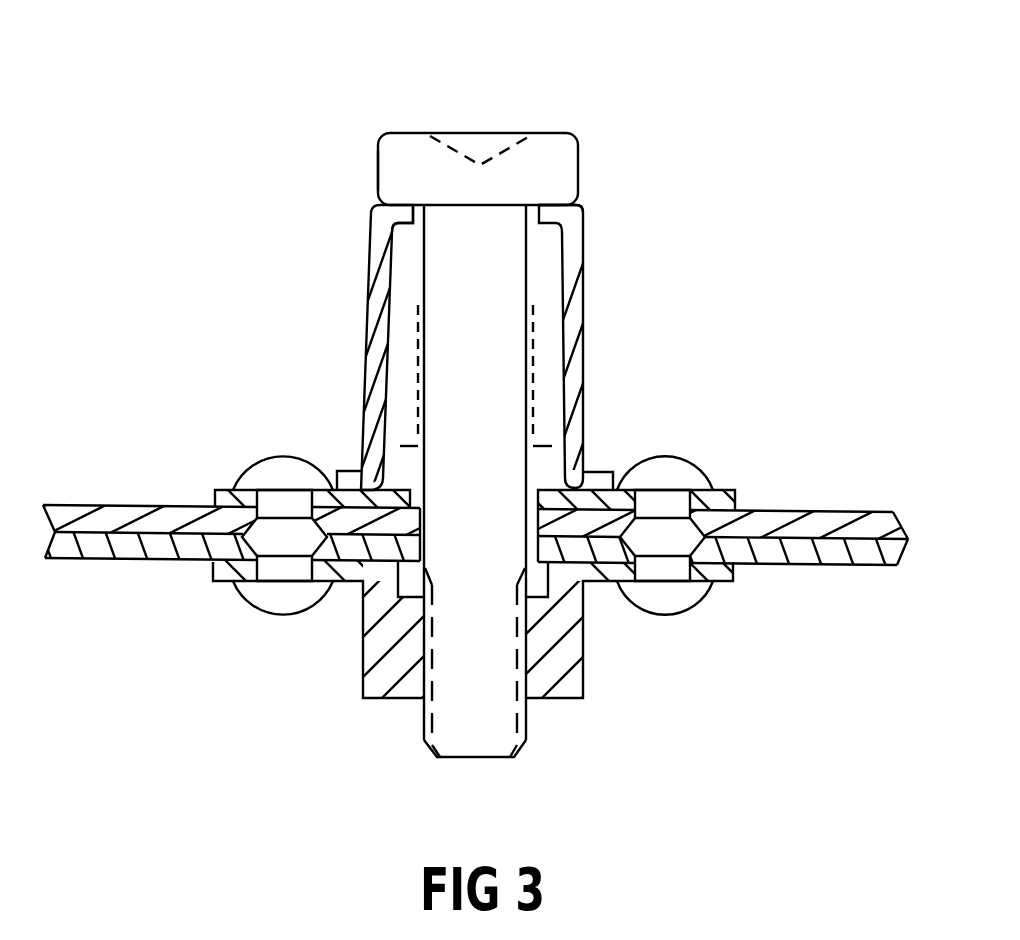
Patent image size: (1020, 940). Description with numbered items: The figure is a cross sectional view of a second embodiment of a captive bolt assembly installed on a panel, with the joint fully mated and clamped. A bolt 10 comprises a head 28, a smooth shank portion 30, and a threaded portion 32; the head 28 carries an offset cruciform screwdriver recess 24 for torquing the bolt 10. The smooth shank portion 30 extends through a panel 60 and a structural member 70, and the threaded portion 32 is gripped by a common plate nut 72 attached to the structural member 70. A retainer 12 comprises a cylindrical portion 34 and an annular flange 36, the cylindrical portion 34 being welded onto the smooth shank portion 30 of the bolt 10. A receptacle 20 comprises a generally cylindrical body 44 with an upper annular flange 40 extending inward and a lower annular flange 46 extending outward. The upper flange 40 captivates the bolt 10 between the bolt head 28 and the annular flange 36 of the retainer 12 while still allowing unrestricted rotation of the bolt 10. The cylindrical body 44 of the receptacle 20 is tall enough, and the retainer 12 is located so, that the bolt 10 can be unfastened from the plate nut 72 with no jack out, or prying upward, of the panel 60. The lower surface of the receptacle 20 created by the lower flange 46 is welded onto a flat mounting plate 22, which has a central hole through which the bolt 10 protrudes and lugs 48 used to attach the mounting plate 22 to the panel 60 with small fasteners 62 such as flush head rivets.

The bolt 10 is at (568, 137).
The retainer 12 is at (423, 308).
The receptacle 20 is at (585, 270).
The mounting plate 22 is at (203, 527).
The offset cruciform screwdriver recess 24 is at (512, 140).
The head 28 is at (377, 163).
The smooth shank portion 30 is at (425, 253).
The threaded portion 32 is at (528, 712).
The cylindrical portion 34 is at (417, 377).
The annular flange 36 is at (408, 440).
The upper annular flange 40 is at (565, 205).
The cylindrical body 44 is at (587, 322).
The lower annular flange 46 is at (594, 473).
The lugs 48 is at (723, 492).
The panel 60 is at (170, 505).
The small fasteners 62 is at (677, 460).
The structural member 70 is at (770, 565).
The plate nut 72 is at (585, 630).